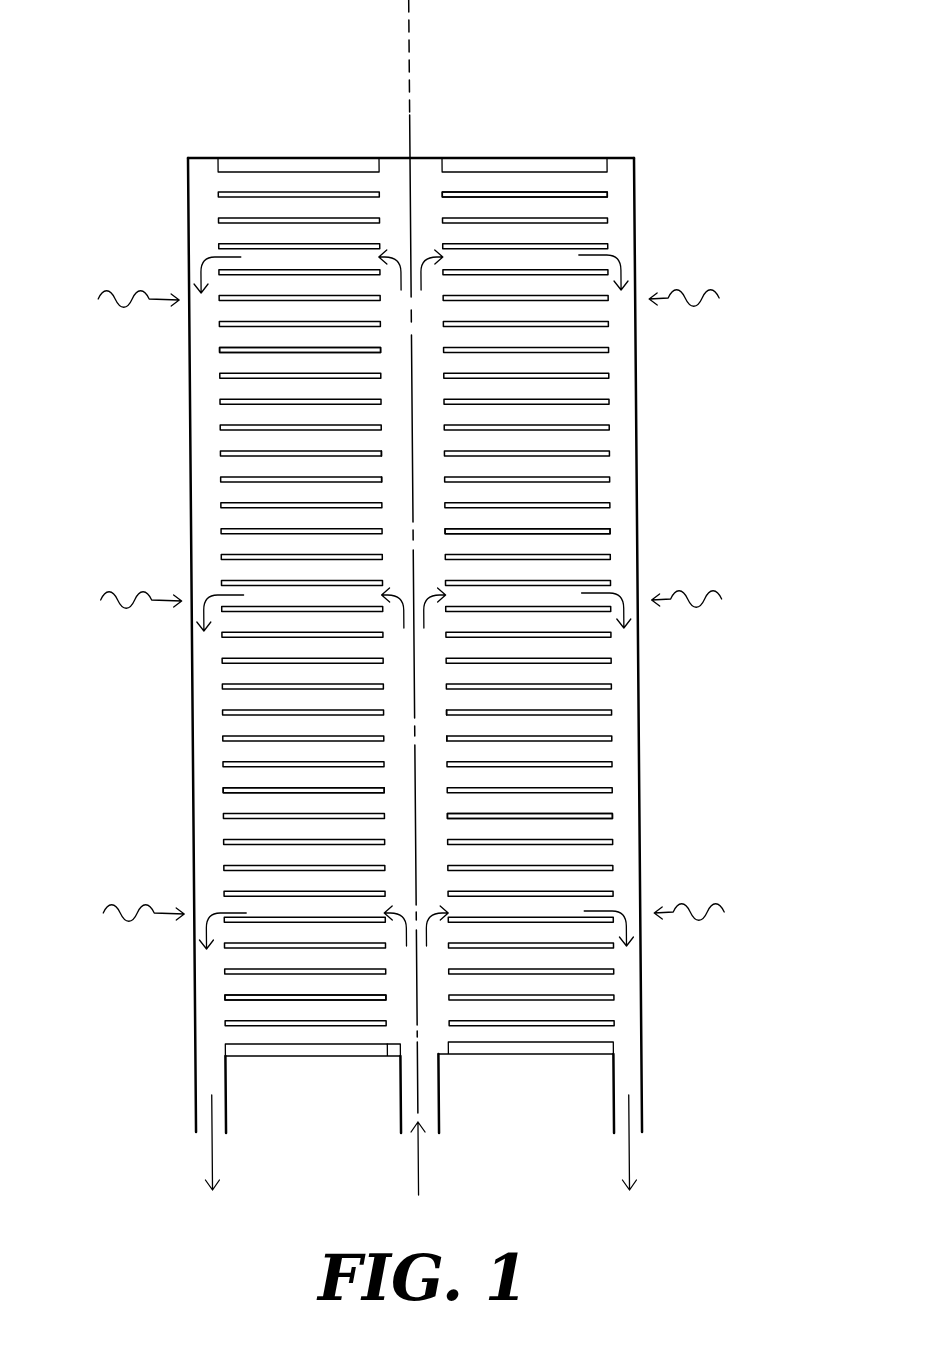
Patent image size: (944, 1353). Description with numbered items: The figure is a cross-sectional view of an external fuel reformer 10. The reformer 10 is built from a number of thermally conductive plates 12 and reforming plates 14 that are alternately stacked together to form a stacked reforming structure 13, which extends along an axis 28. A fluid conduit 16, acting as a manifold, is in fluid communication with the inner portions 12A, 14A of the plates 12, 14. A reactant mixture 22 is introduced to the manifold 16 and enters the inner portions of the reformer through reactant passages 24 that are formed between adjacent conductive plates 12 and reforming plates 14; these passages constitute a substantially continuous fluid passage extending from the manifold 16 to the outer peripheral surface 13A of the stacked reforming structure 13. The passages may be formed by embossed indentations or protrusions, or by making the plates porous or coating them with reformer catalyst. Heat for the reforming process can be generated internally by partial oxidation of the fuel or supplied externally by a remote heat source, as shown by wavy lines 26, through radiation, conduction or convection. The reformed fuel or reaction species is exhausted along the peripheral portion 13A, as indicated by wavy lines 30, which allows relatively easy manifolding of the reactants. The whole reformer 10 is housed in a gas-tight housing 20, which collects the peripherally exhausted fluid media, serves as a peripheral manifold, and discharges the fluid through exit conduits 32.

The reformer 10 is at (663, 97).
The thermally conductive plate 12 is at (222, 455).
The inner portion of conductive plate 12A is at (373, 449).
The stacked reforming structure 13 is at (218, 157).
The outer peripheral surface 13A is at (606, 815).
The reforming plate 14 is at (222, 478).
The inner portion of reforming plate 14A is at (376, 481).
The fluid conduit 16 is at (403, 1030).
The gas-tight housing 20 is at (427, 159).
The reactant mixture 22 is at (418, 1165).
The reactant passage 24 is at (600, 207).
The wavy lines indicating external heat 26 is at (97, 298).
The axis 28 is at (413, 18).
The wavy lines indicating exhausted reformed fuel 30 is at (198, 263).
The exit conduit 32 is at (203, 1153).